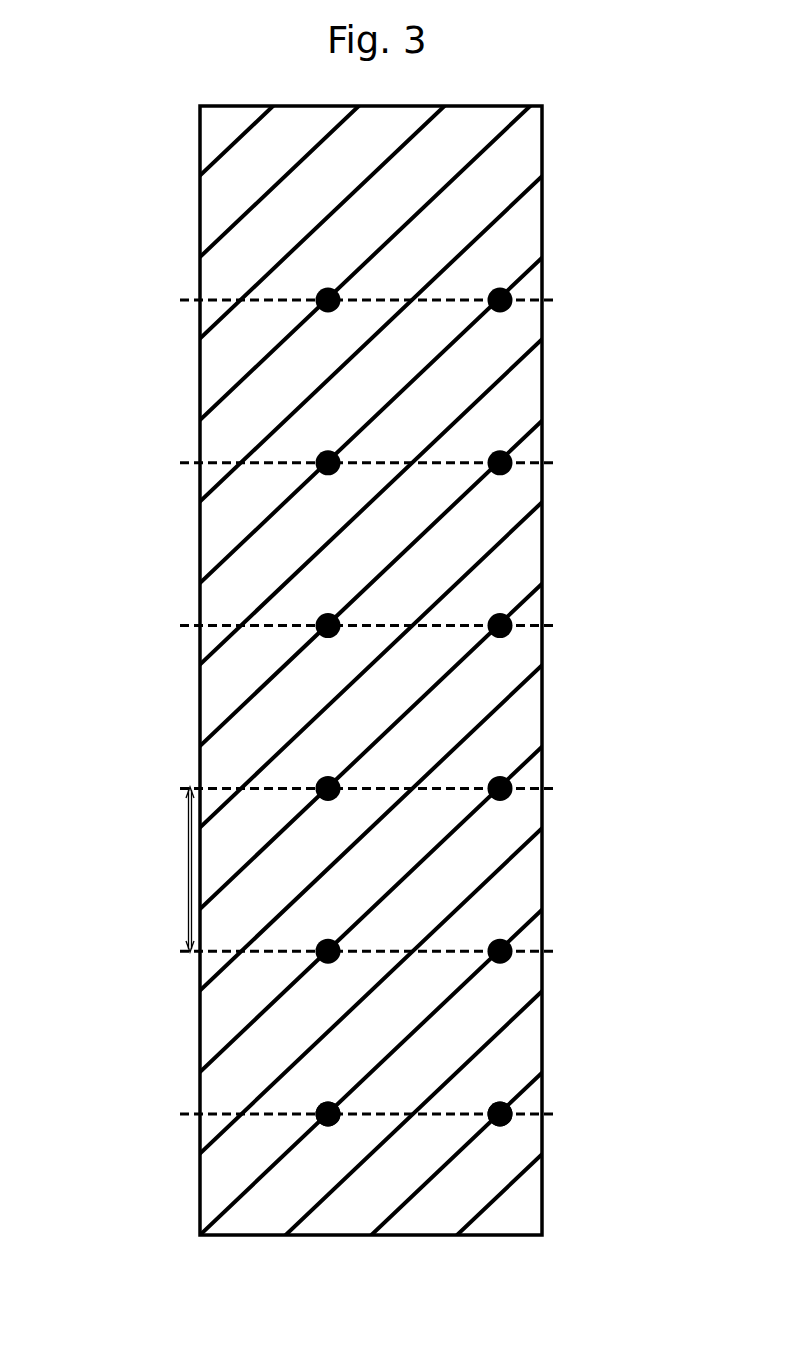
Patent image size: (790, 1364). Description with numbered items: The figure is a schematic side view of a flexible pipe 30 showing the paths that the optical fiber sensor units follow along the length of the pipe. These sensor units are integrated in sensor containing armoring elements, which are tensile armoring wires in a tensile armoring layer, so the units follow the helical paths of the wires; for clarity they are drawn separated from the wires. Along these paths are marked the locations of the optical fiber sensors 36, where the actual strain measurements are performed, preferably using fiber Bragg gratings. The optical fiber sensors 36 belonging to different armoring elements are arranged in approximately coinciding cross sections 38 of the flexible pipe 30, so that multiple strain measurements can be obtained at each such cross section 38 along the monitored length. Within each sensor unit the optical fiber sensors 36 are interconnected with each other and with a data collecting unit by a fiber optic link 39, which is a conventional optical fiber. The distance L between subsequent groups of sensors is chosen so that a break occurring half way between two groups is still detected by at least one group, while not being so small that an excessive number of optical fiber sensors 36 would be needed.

The flexible pipe 30 is at (602, 252).
The optical fiber sensors 36 is at (332, 637).
The coinciding cross sections 38 is at (367, 707).
The fiber optic link 39 is at (320, 1124).
The distance between subsequent groups of sensors L is at (178, 869).